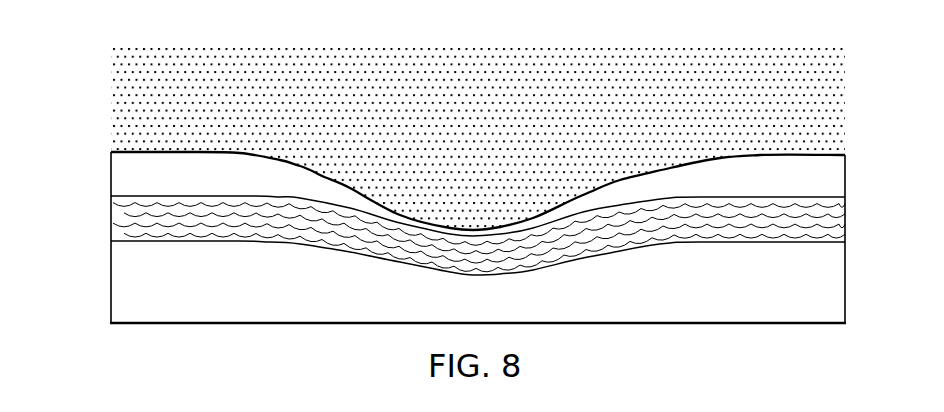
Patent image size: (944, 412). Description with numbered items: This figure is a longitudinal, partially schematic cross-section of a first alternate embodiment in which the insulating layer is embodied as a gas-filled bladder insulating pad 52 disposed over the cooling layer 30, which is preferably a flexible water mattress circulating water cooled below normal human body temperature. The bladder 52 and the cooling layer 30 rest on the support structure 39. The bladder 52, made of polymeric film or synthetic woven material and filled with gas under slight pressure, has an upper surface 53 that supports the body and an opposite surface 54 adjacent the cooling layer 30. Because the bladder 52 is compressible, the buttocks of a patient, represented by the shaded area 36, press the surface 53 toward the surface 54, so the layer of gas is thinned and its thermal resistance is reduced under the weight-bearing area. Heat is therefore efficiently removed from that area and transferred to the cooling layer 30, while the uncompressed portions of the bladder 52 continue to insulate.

The shaded area 36 is at (856, 53).
The gas-filled bladder insulating pad 52 is at (856, 156).
The surface of the bladder 53 is at (134, 152).
The surface of the bladder 54 is at (128, 196).
The cooling layer 30 is at (856, 199).
The support structure 39 is at (856, 243).